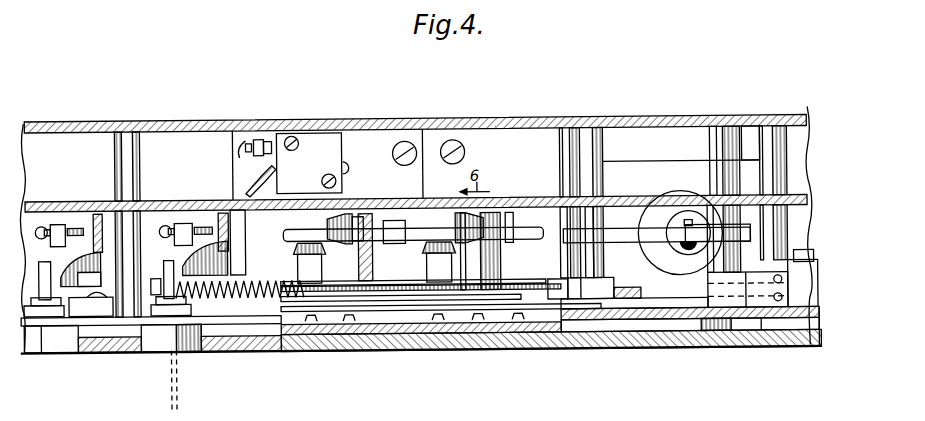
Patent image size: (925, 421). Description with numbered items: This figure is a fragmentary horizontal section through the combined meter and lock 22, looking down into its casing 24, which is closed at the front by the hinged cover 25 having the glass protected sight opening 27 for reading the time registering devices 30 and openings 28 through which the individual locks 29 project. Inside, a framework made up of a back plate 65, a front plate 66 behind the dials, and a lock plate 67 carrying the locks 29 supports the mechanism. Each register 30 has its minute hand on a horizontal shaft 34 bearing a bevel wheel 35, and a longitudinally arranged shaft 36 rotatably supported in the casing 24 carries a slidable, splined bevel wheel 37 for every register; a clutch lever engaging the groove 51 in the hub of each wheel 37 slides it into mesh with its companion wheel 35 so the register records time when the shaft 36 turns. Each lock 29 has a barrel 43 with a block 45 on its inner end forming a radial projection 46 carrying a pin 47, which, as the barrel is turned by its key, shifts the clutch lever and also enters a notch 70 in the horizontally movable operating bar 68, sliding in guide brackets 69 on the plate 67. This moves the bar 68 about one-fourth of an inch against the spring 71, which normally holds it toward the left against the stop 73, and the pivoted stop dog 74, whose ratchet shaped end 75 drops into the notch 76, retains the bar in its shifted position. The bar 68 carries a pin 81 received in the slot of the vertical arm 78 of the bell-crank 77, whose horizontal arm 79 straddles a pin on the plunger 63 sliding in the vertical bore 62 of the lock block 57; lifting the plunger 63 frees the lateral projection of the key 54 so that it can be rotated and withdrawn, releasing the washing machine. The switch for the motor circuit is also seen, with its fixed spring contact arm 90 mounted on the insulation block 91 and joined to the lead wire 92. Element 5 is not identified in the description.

The machine frame member 5 is at (803, 257).
The combined meter and lock 22 is at (605, 117).
The casing 24 is at (490, 124).
The front cover 25 is at (551, 344).
The sight opening 27 is at (500, 347).
The openings 28 is at (80, 342).
The individual lock 29 is at (52, 341).
The time registering device 30 is at (462, 312).
The horizontal shaft 34 is at (300, 240).
The bevel wheel 35 is at (295, 249).
The longitudinally arranged shaft 36 is at (528, 218).
The bevel wheel 37 is at (344, 211).
The barrel 43 is at (56, 344).
The block 45 is at (143, 329).
The radial projection 46 is at (167, 310).
The pin 47 is at (44, 266).
The groove 51 is at (378, 201).
The key 54 is at (737, 355).
The lock block 57 is at (655, 178).
The vertical bore 62 is at (660, 309).
The plunger 63 is at (722, 327).
The back plate 65 is at (171, 202).
The front plate 66 is at (378, 313).
The lock plate 67 is at (760, 324).
The operating bar 68 is at (661, 322).
The guide brackets 69 is at (97, 297).
The notch 70 is at (688, 353).
The spring 71 is at (278, 345).
The stop 73 is at (800, 330).
The stop dog 74 is at (763, 277).
The ratchet shaped end 75 is at (713, 280).
The notch 76 is at (777, 345).
The bell-crank 77 is at (600, 200).
The vertical arm 78 is at (562, 287).
The horizontal arm 79 is at (625, 225).
The pin 81 is at (590, 278).
The fixed spring contact arm 90 is at (285, 191).
The insulation block 91 is at (313, 145).
The lead wire 92 is at (245, 196).